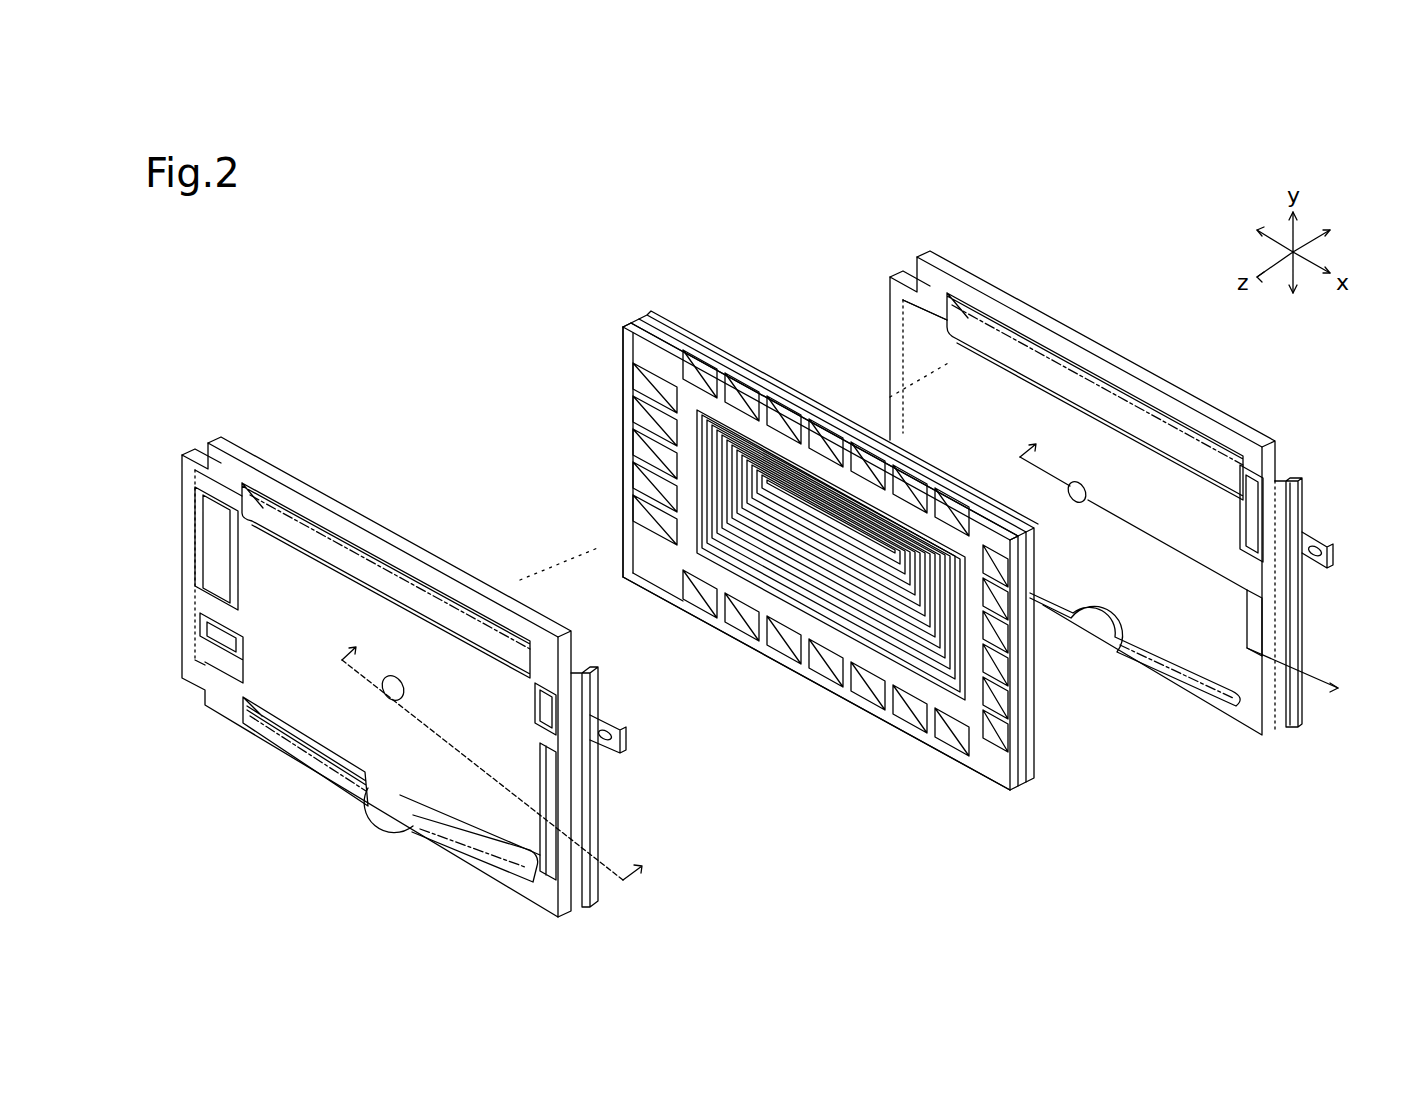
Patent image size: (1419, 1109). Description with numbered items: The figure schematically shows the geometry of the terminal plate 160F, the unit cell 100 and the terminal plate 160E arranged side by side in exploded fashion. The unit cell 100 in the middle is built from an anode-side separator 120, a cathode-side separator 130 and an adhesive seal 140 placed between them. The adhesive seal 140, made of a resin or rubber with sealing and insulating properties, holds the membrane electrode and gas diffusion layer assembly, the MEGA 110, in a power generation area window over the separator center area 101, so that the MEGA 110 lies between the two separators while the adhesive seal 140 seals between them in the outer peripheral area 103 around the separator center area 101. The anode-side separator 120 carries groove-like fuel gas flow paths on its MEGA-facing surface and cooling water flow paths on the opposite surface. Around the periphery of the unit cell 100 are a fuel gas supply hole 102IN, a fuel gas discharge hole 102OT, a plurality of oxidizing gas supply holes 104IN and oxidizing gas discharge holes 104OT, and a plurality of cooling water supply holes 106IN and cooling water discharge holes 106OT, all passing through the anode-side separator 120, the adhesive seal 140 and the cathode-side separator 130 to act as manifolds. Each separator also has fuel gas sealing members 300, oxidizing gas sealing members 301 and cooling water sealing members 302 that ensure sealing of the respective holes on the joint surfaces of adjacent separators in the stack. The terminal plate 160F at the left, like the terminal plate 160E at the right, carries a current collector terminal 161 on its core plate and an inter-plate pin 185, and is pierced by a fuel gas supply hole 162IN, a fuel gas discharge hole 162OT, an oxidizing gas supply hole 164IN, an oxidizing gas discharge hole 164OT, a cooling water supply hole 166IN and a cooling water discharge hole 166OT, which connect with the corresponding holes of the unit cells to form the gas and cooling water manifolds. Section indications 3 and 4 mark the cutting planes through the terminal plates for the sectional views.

The unit cell 100 is at (789, 316).
The separator center area 101 is at (677, 603).
The fuel gas discharge hole 102OT is at (637, 515).
The fuel gas supply hole 102IN is at (1000, 690).
The outer peripheral area 103 is at (625, 565).
The oxidizing gas discharge holes 104OT is at (880, 433).
The oxidizing gas supply holes 104IN is at (937, 737).
The cooling water discharge holes 106OT is at (623, 453).
The cooling water supply holes 106IN is at (1000, 720).
The membrane electrode and gas diffusion layer assembly (MEGA) 110 is at (630, 325).
The adhesive seal 140 is at (820, 431).
The anode-side separator 120 is at (660, 345).
The cathode-side separator 130 is at (641, 316).
The terminal plate 160F is at (243, 447).
The terminal plate 160E is at (947, 268).
The current collector terminal 161 is at (620, 746).
The fuel gas discharge hole 162OT is at (245, 650).
The fuel gas supply hole 162IN is at (537, 710).
The oxidizing gas discharge hole 164OT is at (368, 568).
The oxidizing gas supply hole 164IN is at (348, 746).
The cooling water discharge hole 166OT is at (222, 540).
The cooling water supply hole 166IN is at (545, 770).
The inter-plate pin 185 is at (418, 668).
The fuel gas sealing members 300 is at (227, 697).
The oxidizing gas sealing members 301 is at (367, 520).
The cooling water sealing members 302 is at (598, 782).
The section line 3- 3 is at (506, 757).
The section line 4- 4 is at (1189, 559).